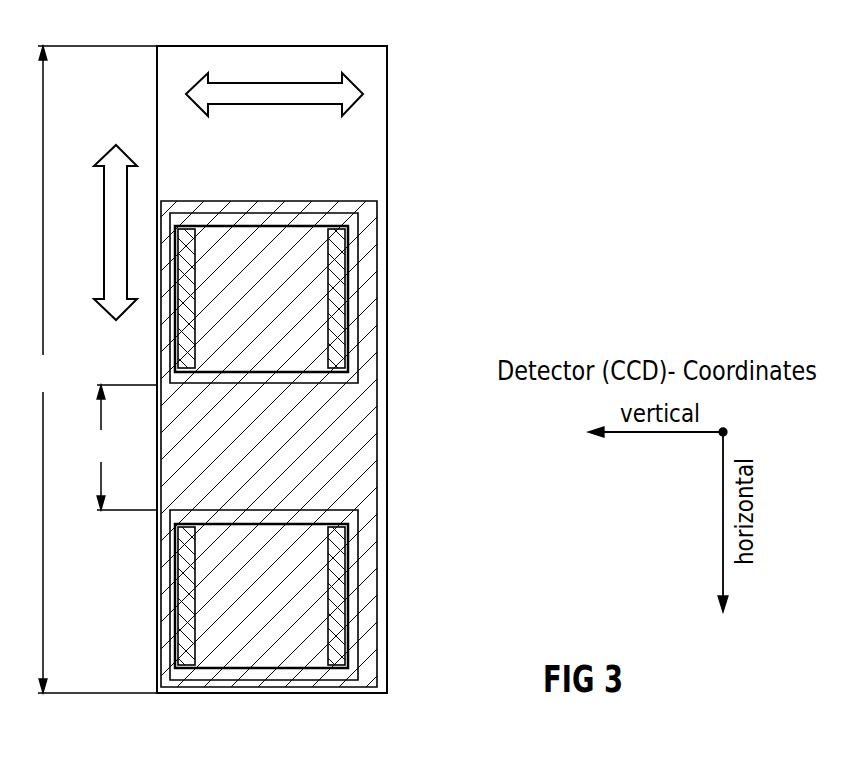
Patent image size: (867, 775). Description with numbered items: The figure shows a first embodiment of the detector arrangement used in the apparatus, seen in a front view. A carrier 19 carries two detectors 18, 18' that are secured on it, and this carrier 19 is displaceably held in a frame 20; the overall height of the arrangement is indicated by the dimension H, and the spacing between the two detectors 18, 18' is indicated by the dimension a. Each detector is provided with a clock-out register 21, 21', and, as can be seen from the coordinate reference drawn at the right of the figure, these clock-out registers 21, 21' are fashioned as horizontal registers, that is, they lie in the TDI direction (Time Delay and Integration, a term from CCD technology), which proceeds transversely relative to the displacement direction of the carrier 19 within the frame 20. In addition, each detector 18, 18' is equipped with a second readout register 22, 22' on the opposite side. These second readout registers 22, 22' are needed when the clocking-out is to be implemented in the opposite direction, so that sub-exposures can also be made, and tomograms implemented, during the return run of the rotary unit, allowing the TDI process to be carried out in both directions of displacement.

The frame 20 is at (387, 153).
The carrier 19 is at (164, 562).
The detector 18 is at (304, 596).
The detector 18' is at (307, 299).
The clock-out register 21 is at (154, 599).
The clock-out register 21' is at (151, 299).
The readout register 22 is at (381, 599).
The readout register 22' is at (384, 299).
The detector height H is at (95, 369).
The spacing between windows a is at (125, 447).